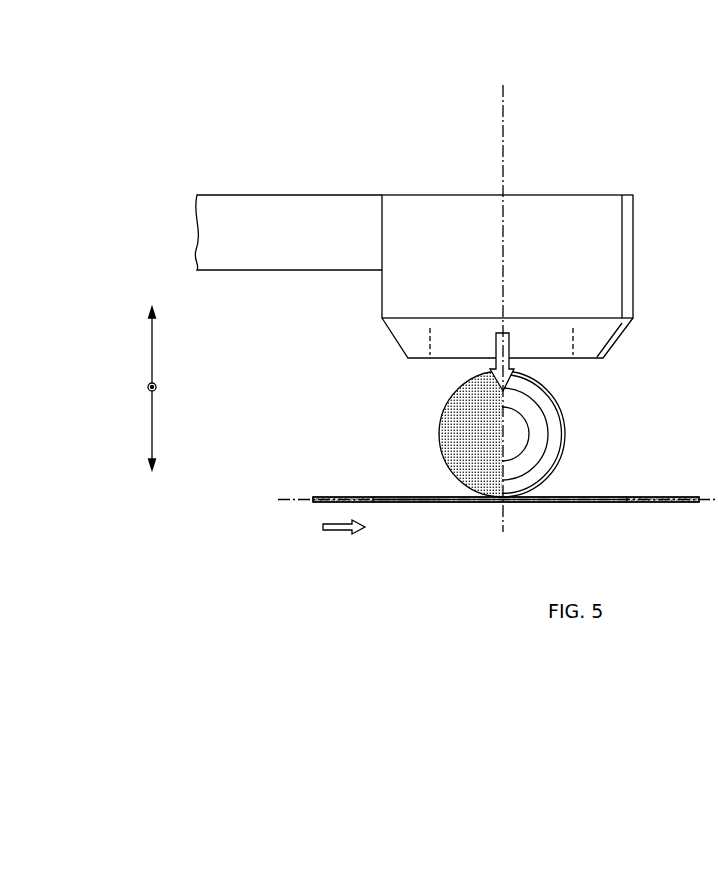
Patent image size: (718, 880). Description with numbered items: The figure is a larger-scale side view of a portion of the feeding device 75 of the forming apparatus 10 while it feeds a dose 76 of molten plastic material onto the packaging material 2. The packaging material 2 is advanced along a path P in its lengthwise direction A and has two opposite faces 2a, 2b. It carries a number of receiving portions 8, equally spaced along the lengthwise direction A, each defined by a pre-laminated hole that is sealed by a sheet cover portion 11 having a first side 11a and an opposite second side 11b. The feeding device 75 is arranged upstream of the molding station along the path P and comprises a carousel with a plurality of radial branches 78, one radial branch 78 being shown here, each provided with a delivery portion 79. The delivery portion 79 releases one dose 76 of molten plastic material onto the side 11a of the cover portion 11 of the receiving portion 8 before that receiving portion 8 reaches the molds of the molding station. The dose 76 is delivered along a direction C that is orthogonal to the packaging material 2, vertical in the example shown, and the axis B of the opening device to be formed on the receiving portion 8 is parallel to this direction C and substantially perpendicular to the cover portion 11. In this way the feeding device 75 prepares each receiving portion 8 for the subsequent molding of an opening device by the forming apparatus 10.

The feeding device 75 is at (283, 167).
The radial branch 78 is at (327, 220).
The forming apparatus 10 is at (537, 242).
The delivery portion 79 is at (545, 340).
The dose of molten plastic material 76 is at (535, 437).
The packaging material 2 is at (495, 490).
The face of packaging material 2a is at (333, 492).
The face of packaging material 2b is at (644, 510).
The cover portion 11 is at (428, 492).
The side of cover portion 11a is at (577, 496).
The side of cover portion 11b is at (558, 510).
The receiving portion 8 is at (441, 509).
The lengthwise direction A is at (305, 500).
The axis of opening device B is at (498, 150).
The direction orthogonal to packaging material C is at (152, 368).
The path P is at (330, 532).